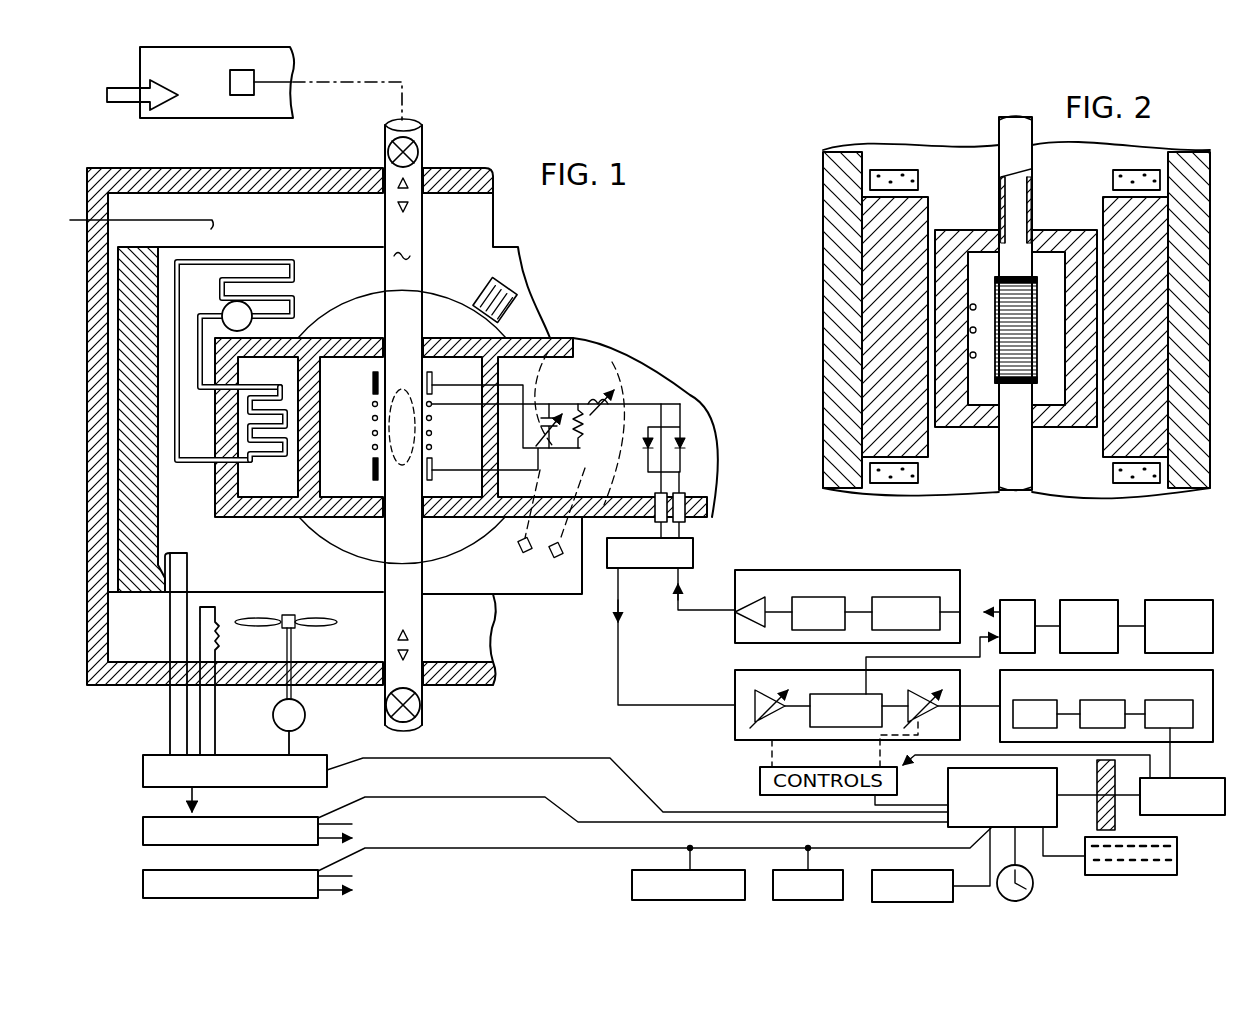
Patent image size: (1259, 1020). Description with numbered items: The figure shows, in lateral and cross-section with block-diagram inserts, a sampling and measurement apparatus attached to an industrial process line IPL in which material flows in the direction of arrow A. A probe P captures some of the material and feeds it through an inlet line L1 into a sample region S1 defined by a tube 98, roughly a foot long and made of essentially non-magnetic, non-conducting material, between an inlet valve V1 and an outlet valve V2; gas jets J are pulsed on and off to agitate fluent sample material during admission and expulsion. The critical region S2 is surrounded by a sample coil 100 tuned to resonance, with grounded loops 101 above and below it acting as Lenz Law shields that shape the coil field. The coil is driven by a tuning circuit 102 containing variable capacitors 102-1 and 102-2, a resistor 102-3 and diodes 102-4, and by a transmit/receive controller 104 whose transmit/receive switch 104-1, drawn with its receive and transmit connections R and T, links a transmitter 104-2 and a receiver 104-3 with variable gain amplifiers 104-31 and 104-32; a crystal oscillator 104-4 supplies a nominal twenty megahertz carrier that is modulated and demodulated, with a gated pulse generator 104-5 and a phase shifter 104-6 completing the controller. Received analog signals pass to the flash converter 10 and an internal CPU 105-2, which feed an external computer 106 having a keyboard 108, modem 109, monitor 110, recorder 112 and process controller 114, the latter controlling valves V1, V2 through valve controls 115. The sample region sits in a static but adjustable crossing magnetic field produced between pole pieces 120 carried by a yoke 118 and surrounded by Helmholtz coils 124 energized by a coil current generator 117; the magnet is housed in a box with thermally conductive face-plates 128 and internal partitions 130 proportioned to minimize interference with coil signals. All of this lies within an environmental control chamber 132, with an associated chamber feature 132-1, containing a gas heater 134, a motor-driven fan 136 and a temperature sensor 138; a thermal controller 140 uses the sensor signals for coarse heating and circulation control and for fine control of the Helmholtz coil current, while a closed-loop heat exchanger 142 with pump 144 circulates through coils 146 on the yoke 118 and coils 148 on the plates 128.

In FIG. 1, the industrial process line IPL is at (140, 57).
In FIG. 1, the probe P is at (254, 74).
In FIG. 1, the arrow indicating material flow A is at (132, 100).
In FIG. 1, the inlet line L1 is at (406, 100).
In FIG. 1, the environmental control chamber 132 is at (258, 166).
In FIG. 1, the housing line 132-1 is at (143, 219).
In FIG. 1, the yoke 118 is at (140, 258).
In FIG. 2, the yoke 118 is at (823, 224).
In FIG. 1, the closed loop heat exchanger 142 is at (257, 331).
In FIG. 1, the coils 146 is at (276, 261).
In FIG. 1, the pump 144 is at (226, 306).
In FIG. 1, the tube 98 is at (455, 424).
In FIG. 2, the tube 98 is at (997, 147).
In FIG. 1, the inlet valve V1 is at (416, 150).
In FIG. 1, the outlet valve V2 is at (422, 707).
In FIG. 1, the gas jets J is at (408, 655).
In FIG. 1, the sample region S1 is at (401, 244).
In FIG. 1, the critical sample region S2 is at (402, 427).
In FIG. 1, the Helmholtz coils 124 is at (502, 292).
In FIG. 2, the Helmholtz coils 124 is at (1113, 180).
In FIG. 1, the pole pieces 120 is at (503, 332).
In FIG. 2, the pole pieces 120 is at (910, 278).
In FIG. 1, the face-plates 128 is at (273, 381).
In FIG. 2, the face-plates 128 is at (962, 228).
In FIG. 1, the internal partitions 130 is at (290, 438).
In FIG. 1, the coils 148 is at (236, 480).
In FIG. 2, the coils 148 is at (975, 302).
In FIG. 1, the sample coil 100 is at (368, 410).
In FIG. 2, the sample coil 100 is at (1038, 352).
In FIG. 1, the grounded loops 101 is at (370, 388).
In FIG. 2, the grounded loops 101 is at (1040, 292).
In FIG. 1, the tuning circuit 102 is at (578, 396).
In FIG. 1, the variable capacitor 102-1 is at (562, 407).
In FIG. 1, the variable capacitor 102-2 is at (612, 392).
In FIG. 1, the resistor 102-3 is at (592, 438).
In FIG. 1, the diodes 102-4 is at (660, 442).
In FIG. 1, the temperature sensor 138 is at (165, 562).
In FIG. 1, the internal gas heater 134 is at (225, 630).
In FIG. 1, the fan 136 is at (289, 614).
In FIG. 1, the receive feedthrough R is at (632, 472).
In FIG. 1, the transmit feedthrough T is at (671, 506).
In FIG. 1, the transmitter/receiver controller 104 is at (585, 637).
In FIG. 1, the transmit/receive switch 104-1 is at (694, 562).
In FIG. 1, the transmitter 104-2 is at (737, 622).
In FIG. 1, the receiver 104-3 is at (828, 702).
In FIG. 1, the variable gain amplifier element 104-31 is at (752, 722).
In FIG. 1, the variable gain amplifier element 104-32 is at (909, 700).
In FIG. 1, the crystal oscillator 104-4 is at (1174, 599).
In FIG. 1, the gated pulse generator 104-5 is at (1085, 599).
In FIG. 1, the phase shifter 104-6 is at (1018, 598).
In FIG. 1, the flash converter 10 is at (1215, 690).
In FIG. 1, the CPU element 105-2 is at (1190, 778).
In FIG. 1, the external computer 106 is at (985, 826).
In FIG. 1, the keyboard 108 is at (1179, 864).
In FIG. 1, the modem 109 is at (915, 868).
In FIG. 1, the monitor 110 is at (1038, 867).
In FIG. 1, the recorder 112 is at (793, 868).
In FIG. 1, the process controller 114 is at (632, 882).
In FIG. 1, the thermal controller 140 is at (143, 776).
In FIG. 1, the coil current generator 117 is at (143, 834).
In FIG. 1, the valve controls 115 is at (143, 886).